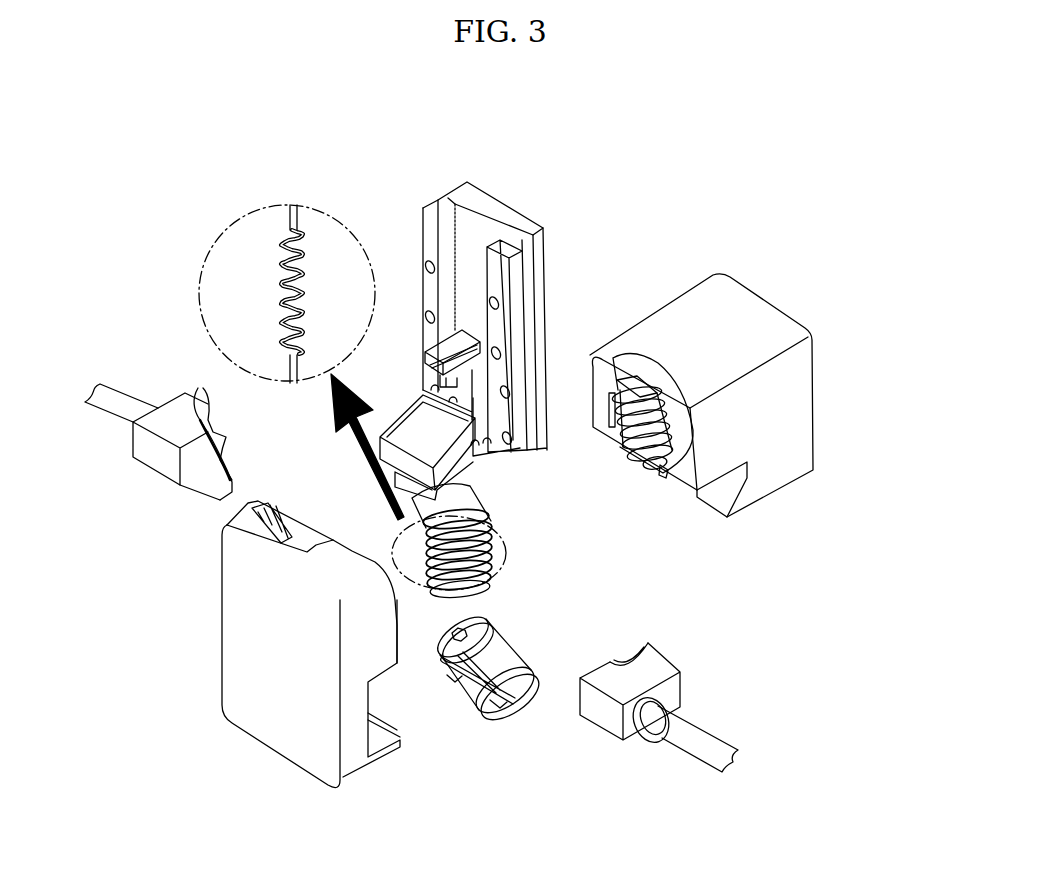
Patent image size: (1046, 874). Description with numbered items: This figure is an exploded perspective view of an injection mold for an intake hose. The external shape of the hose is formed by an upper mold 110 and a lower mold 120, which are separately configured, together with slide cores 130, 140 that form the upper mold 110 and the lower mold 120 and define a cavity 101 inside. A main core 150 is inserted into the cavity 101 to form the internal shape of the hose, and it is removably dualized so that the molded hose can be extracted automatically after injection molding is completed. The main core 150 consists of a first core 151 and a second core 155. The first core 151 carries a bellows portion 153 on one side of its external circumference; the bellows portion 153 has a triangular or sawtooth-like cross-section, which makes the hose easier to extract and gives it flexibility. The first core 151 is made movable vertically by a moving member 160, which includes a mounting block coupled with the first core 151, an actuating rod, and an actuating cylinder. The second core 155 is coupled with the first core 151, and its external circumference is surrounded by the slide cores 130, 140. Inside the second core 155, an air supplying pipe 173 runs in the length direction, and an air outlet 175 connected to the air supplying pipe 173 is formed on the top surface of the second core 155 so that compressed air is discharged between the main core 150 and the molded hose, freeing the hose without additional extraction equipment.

The cavity 101 is at (213, 408).
The upper mold 110 is at (690, 313).
The lower mold 120 is at (245, 592).
The slide core 130 is at (178, 410).
The slide core 140 is at (603, 712).
The main core 150 is at (503, 614).
The first core 151 is at (490, 516).
The bellows portion 153 is at (274, 238).
The second core 155 is at (485, 701).
The moving member 160 is at (527, 202).
The air supplying pipe 173 is at (483, 690).
The air outlet 175 is at (459, 616).